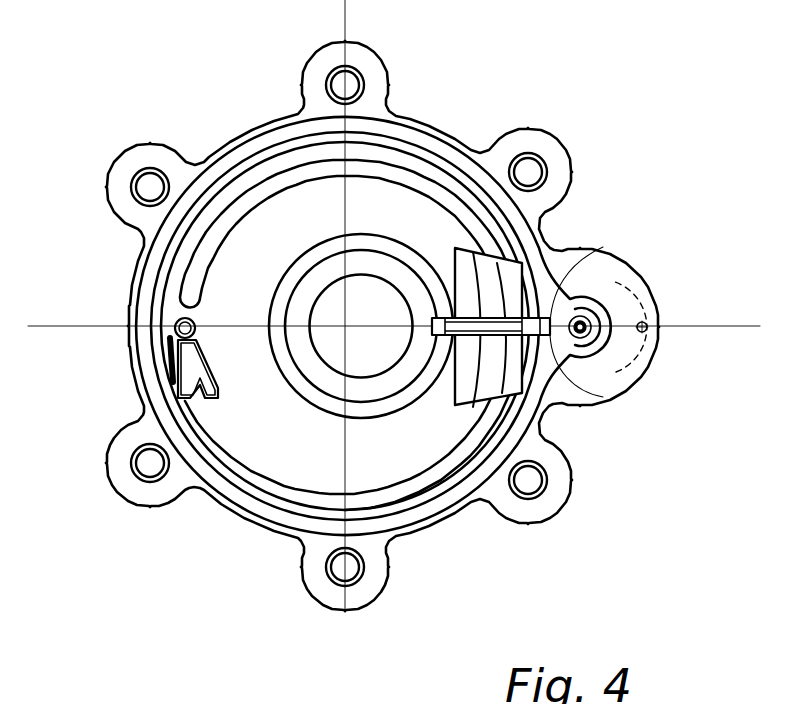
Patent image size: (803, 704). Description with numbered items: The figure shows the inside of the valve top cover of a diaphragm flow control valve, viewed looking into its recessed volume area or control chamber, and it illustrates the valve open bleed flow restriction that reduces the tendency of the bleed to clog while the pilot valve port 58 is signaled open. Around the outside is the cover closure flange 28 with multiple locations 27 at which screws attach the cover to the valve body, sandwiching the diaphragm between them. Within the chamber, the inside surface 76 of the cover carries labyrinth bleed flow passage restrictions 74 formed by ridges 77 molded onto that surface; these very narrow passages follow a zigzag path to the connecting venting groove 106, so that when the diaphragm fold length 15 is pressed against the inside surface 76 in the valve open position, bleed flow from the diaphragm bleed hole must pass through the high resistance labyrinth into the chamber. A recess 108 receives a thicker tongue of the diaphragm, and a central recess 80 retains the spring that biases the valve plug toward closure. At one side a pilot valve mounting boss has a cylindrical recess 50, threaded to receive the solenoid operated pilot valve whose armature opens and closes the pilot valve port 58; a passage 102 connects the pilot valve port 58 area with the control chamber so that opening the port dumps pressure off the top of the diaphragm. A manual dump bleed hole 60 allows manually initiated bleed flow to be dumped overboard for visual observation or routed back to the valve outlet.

The diaphragm fold length 15 is at (293, 703).
The screw locations 27 is at (152, 192).
The cover closure flange 28 is at (430, 508).
The cylindrical recess 50 is at (652, 378).
The pilot valve port 58 is at (586, 320).
The manual dump bleed hole 60 is at (648, 323).
The labyrinth bleed flow passage restrictions 74 is at (168, 358).
The inside surface of the valve top cover 76 is at (294, 230).
The ridges 77 is at (176, 326).
The recess 80 is at (365, 285).
The passage 102 is at (560, 350).
The venting groove 106 is at (240, 207).
The recess 108 is at (467, 372).